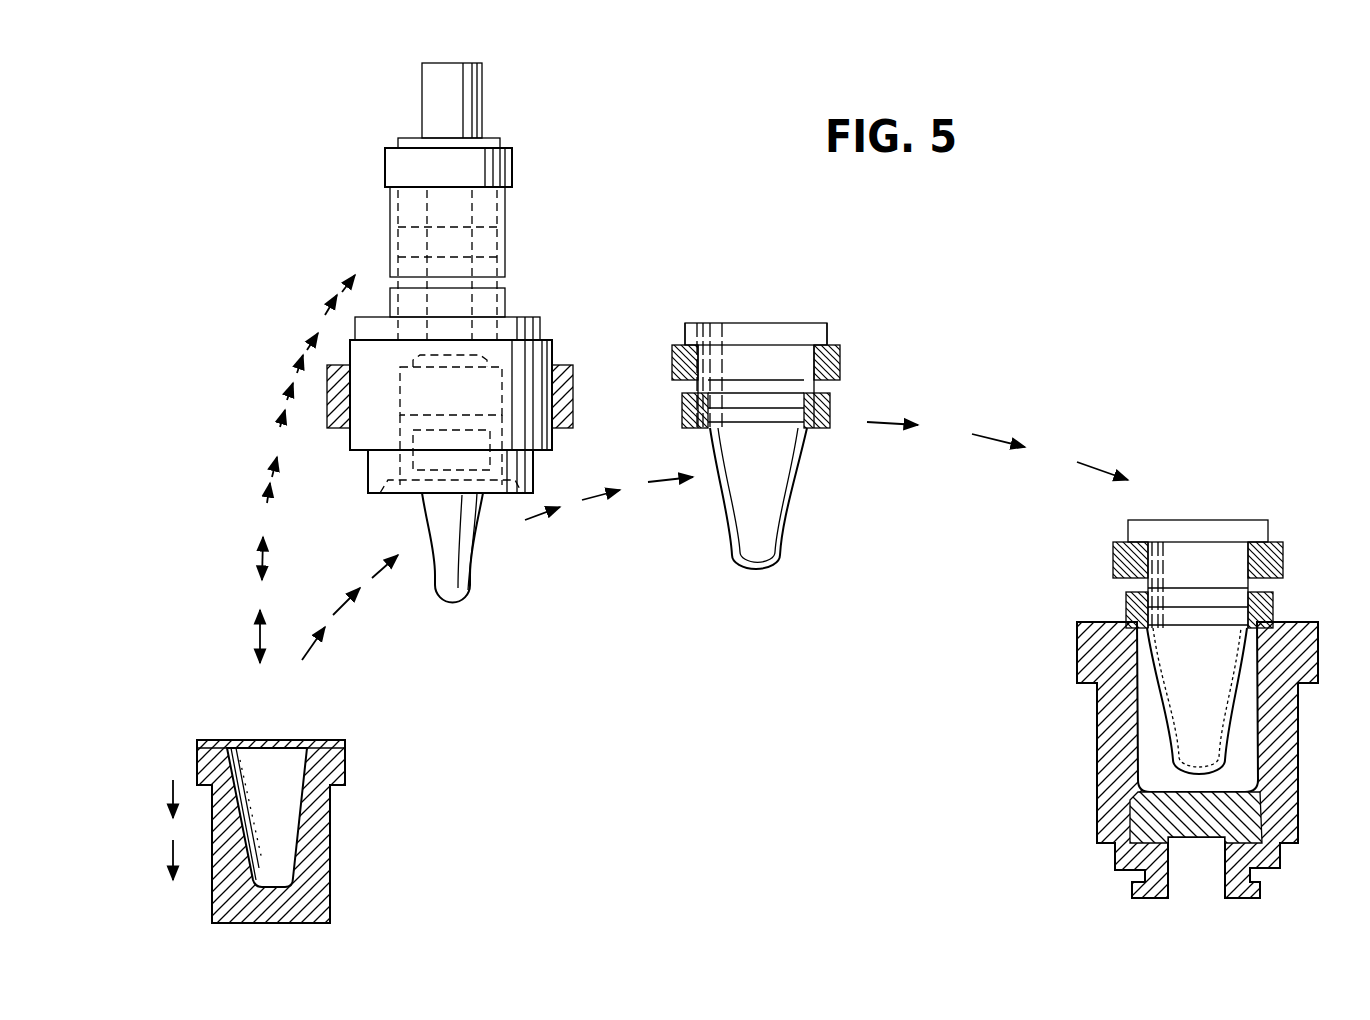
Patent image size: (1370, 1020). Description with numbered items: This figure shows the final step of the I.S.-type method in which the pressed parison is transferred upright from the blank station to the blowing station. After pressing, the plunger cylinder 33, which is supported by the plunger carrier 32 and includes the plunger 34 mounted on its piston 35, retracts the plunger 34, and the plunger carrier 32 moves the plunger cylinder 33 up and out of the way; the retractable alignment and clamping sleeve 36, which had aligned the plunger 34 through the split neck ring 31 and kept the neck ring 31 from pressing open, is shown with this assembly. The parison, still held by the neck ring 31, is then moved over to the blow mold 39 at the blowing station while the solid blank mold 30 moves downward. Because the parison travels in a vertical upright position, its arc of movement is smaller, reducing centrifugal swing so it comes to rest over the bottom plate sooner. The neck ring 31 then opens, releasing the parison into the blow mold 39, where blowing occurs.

The solid blank mold 30 is at (318, 848).
The split neck ring 31 is at (827, 330).
The plunger carrier 32 is at (573, 375).
The plunger cylinder 33 is at (505, 200).
The plunger 34 is at (440, 532).
The piston 35 is at (483, 243).
The retractable alignment and clamping sleeve 36 is at (535, 463).
The blow mold 39 is at (1298, 752).